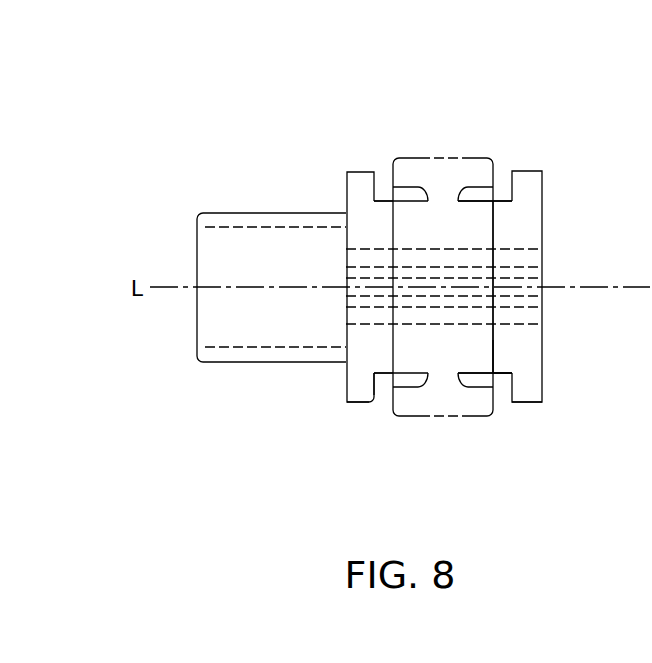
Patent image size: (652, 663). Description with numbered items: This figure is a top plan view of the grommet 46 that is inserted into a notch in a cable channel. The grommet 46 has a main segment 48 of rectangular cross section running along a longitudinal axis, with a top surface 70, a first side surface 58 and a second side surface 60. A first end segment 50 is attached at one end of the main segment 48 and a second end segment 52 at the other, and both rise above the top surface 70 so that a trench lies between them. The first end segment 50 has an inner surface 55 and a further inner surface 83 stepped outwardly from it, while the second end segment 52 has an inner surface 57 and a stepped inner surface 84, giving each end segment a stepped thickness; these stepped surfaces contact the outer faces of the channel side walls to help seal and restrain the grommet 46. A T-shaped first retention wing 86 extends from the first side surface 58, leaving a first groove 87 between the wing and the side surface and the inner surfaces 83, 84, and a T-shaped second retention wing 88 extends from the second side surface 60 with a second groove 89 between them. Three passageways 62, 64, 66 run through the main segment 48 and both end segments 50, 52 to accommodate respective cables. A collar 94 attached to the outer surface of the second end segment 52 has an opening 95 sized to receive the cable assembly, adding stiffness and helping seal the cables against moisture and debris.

The grommet 46 is at (410, 253).
The collar 94 is at (222, 223).
The opening 95 is at (222, 346).
The second end segment 52 is at (350, 245).
The inner surface 84 is at (383, 403).
The first side surface 58 is at (376, 383).
The top surface 70 is at (427, 237).
The main segment 48 is at (511, 236).
The second side surface 60 is at (388, 197).
The inner surface 57 is at (398, 364).
The inner surface 55 is at (492, 347).
The second retention wing 88 is at (444, 167).
The second groove 89 is at (443, 145).
The first retention wing 86 is at (444, 408).
The first groove 87 is at (443, 429).
The first end segment 50 is at (576, 279).
The inner surface 83 is at (507, 403).
The passageway 62 is at (538, 259).
The passageway 64 is at (538, 293).
The passageway 66 is at (538, 317).